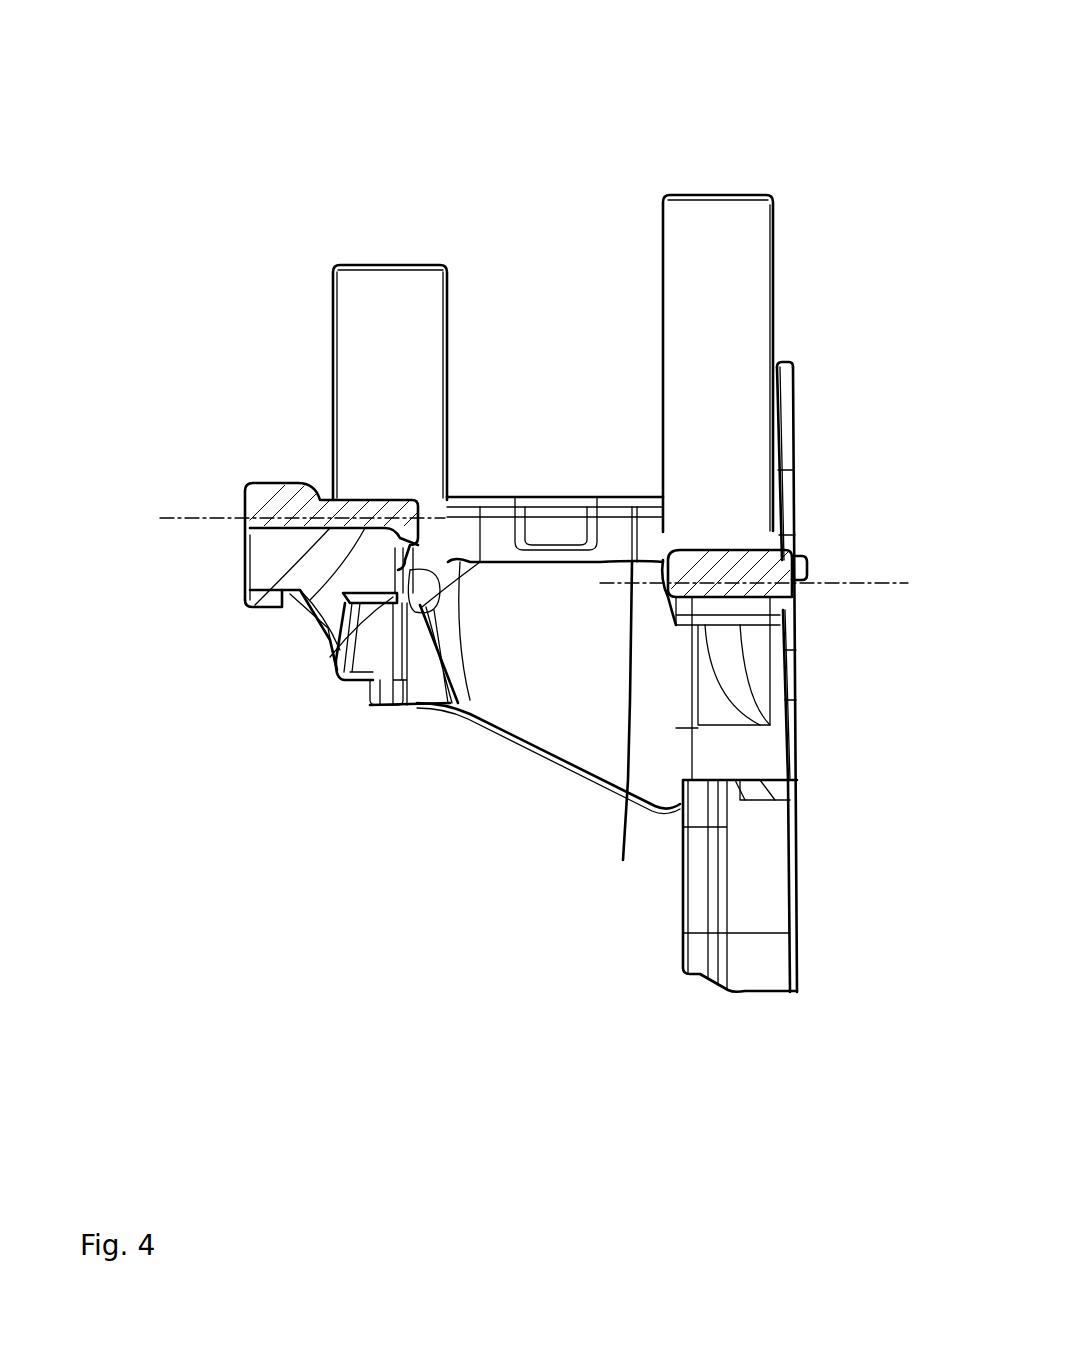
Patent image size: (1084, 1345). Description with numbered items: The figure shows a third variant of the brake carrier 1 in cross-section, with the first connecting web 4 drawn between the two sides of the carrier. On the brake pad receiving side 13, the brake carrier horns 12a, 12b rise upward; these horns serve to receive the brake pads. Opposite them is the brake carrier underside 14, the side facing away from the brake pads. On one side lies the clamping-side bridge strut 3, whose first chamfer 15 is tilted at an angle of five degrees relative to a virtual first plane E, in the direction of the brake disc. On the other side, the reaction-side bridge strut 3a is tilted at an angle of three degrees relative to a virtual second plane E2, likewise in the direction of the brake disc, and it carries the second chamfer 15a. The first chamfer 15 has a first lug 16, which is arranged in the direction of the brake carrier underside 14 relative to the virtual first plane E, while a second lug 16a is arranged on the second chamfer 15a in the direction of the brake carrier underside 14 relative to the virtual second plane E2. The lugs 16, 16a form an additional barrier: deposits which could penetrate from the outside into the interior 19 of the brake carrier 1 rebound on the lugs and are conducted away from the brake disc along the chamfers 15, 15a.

The brake carrier 1 is at (400, 240).
The clamping-side bridge strut 3 is at (797, 507).
The reaction-side bridge strut 3a is at (281, 480).
The first connecting web 4 is at (572, 765).
The brake carrier horn 12a is at (432, 265).
The brake carrier horn 12b is at (705, 195).
The brake pad receiving side 13 is at (262, 220).
The brake carrier underside 14 is at (248, 862).
The first chamfer 15 is at (775, 640).
The second chamfer 15a is at (250, 612).
The first lug 16 is at (662, 600).
The second lug 16a is at (330, 650).
The interior 19 is at (568, 624).
The virtual first plane E is at (894, 586).
The virtual second plane E2 is at (194, 505).